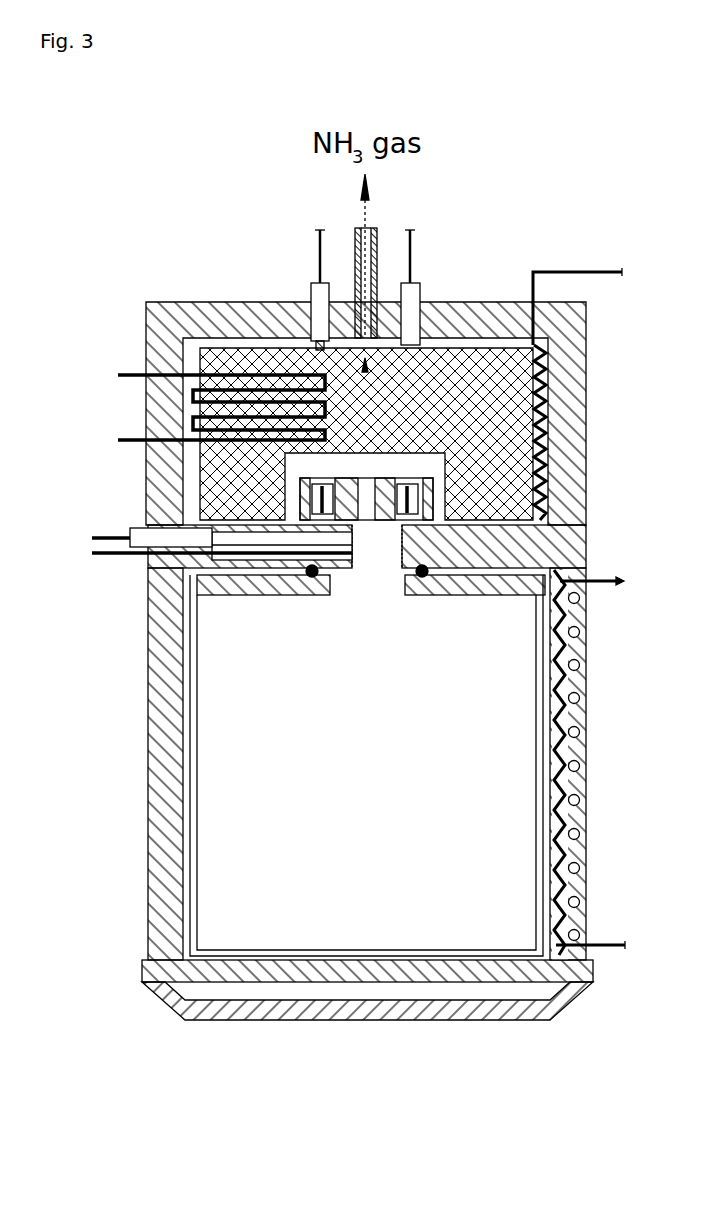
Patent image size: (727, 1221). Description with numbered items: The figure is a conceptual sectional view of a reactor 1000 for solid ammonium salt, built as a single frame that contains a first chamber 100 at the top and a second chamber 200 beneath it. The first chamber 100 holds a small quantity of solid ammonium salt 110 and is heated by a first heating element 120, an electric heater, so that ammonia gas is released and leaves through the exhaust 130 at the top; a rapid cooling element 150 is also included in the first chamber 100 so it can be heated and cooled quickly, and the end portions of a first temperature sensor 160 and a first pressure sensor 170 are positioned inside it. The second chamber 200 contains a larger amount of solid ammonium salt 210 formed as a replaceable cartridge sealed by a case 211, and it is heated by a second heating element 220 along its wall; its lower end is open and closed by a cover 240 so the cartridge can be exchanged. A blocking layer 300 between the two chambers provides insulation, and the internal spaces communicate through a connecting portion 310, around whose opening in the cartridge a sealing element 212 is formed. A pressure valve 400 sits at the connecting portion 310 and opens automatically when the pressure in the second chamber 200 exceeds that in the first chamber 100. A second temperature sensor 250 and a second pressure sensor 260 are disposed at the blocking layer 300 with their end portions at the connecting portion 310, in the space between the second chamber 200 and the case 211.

The reactor for solid ammonium salt 1000 is at (516, 112).
The first chamber 100 is at (177, 302).
The solid ammonium salt 110 is at (185, 480).
The first heating element 120 is at (548, 424).
The exhaust 130 is at (384, 236).
The rapid cooling element 150 is at (150, 357).
The first temperature sensor 160 is at (309, 293).
The first pressure sensor 170 is at (423, 289).
The second chamber 200 is at (162, 746).
The solid ammonium salt 210 is at (232, 873).
The case 211 is at (262, 988).
The sealing element 212 is at (196, 627).
The second heating element 220 is at (578, 806).
The cover 240 is at (357, 1020).
The second temperature sensor 250 is at (130, 524).
The second pressure sensor 260 is at (200, 600).
The blocking layer 300 is at (566, 541).
The connecting portion 310 is at (380, 553).
The pressure valve 400 is at (436, 463).